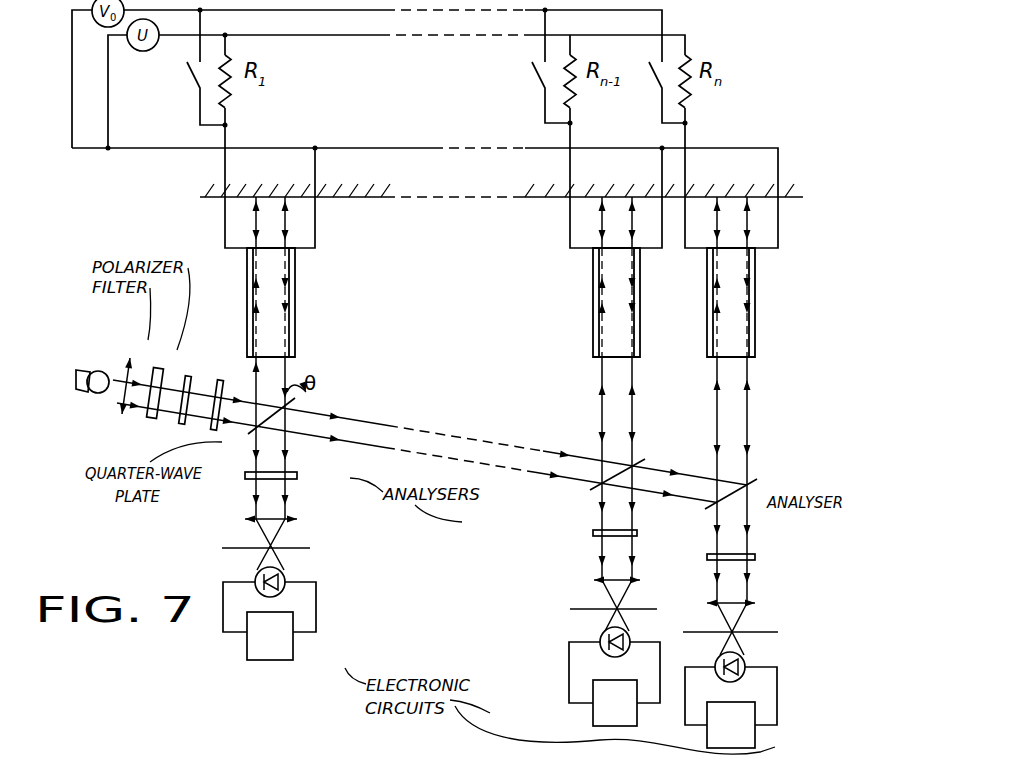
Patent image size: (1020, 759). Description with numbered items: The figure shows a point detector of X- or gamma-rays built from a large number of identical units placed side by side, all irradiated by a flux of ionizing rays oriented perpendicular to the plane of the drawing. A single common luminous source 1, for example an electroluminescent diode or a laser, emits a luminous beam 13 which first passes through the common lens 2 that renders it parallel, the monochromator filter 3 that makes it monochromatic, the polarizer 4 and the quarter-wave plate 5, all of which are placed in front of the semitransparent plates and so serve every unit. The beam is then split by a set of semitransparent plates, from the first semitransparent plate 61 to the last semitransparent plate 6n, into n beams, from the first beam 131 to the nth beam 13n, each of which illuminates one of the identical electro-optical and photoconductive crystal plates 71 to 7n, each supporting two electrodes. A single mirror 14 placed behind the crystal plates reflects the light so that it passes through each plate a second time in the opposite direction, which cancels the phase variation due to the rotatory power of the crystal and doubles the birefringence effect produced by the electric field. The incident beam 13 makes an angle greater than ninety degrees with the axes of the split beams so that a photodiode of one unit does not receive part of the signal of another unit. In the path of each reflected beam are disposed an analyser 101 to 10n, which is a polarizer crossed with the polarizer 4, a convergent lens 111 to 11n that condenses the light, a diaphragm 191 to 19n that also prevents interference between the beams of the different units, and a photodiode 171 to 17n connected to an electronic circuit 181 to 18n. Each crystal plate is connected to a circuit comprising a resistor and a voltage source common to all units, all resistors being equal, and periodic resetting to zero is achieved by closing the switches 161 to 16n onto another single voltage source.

The luminous source 1 is at (98, 371).
The lens 2 is at (129, 357).
The monochromator filter 3 is at (160, 368).
The polarizer 4 is at (189, 372).
The quarter-wave plate 5 is at (222, 376).
The luminous beam 13 is at (116, 391).
The semitransparent plate 61 is at (250, 430).
The electro-optical crystal plate 71 is at (273, 347).
The luminous beam 131 is at (270, 380).
The analyser 101 is at (298, 475).
The convergent lens 111 is at (297, 518).
The diaphragm 191 is at (300, 547).
The photodiode 171 is at (287, 581).
The electronic circuit 181 is at (275, 660).
The mirror 14 is at (205, 198).
The switch 161 is at (191, 76).
The switch 16n is at (652, 73).
The electro-optical crystal plate 7n is at (725, 327).
The luminous beam 13n is at (733, 415).
The semitransparent plate 6n is at (750, 488).
The analyser 10n is at (752, 553).
The convergent lens 11n is at (752, 601).
The diaphragm 19n is at (765, 632).
The photodiode 17n is at (748, 666).
The electronic circuit 18n is at (757, 740).